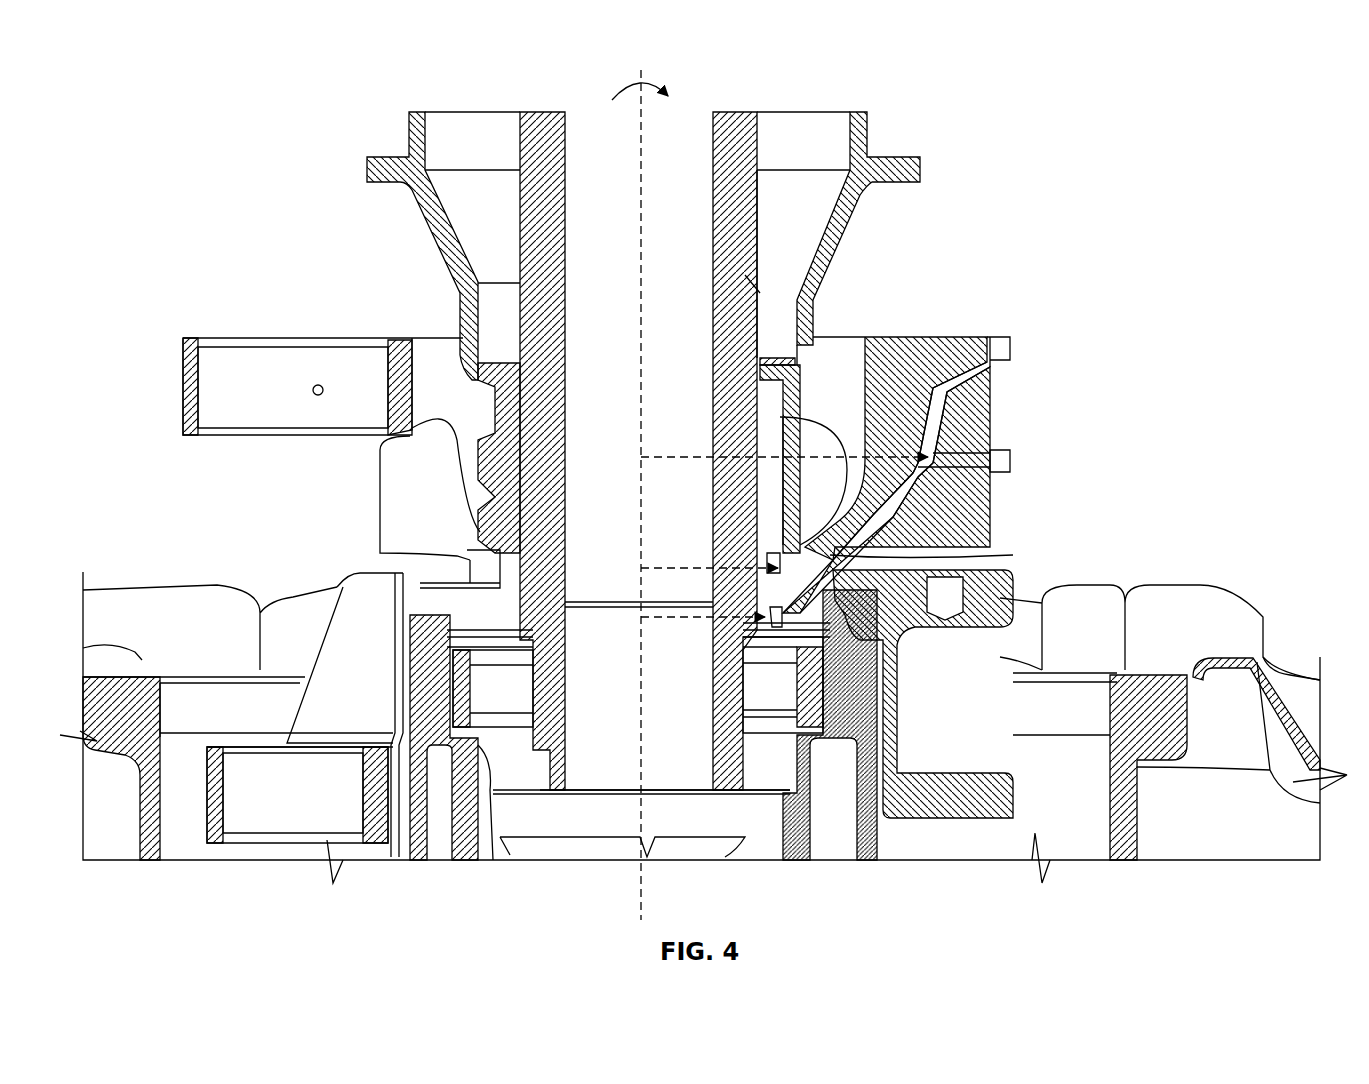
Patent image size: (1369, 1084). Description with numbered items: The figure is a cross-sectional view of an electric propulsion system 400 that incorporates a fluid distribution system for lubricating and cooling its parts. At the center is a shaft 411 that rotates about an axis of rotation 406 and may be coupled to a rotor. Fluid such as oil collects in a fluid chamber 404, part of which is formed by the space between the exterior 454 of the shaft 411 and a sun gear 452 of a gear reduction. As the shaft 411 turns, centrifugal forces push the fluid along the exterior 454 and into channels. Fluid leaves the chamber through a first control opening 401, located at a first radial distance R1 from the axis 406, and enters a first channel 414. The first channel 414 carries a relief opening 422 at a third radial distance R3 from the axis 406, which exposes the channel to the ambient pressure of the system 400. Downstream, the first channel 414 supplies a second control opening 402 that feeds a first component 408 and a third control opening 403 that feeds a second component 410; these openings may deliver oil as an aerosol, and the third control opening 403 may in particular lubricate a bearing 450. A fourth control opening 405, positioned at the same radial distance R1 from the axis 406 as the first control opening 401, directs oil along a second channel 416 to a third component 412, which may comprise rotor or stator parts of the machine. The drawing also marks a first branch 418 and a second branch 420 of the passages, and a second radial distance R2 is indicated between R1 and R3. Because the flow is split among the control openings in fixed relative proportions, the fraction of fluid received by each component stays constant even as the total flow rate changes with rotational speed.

The electric propulsion system 400 is at (147, 66).
The first control opening 401 is at (753, 630).
The second control opening 402 is at (950, 469).
The third control opening 403 is at (956, 382).
The fluid chamber 404 is at (745, 694).
The fourth control opening 405 is at (783, 349).
The axis of rotation 406 is at (642, 887).
The first component 408 is at (1012, 457).
The second component 410 is at (983, 351).
The shaft 411 is at (725, 118).
The third component 412 is at (843, 108).
The first channel 414 is at (873, 520).
The second channel 416 is at (755, 289).
The first branch 418 is at (966, 456).
The second branch 420 is at (977, 357).
The relief opening 422 is at (785, 549).
The bearing 450 is at (318, 390).
The sun gear 452 is at (460, 283).
The exterior 454 is at (837, 360).
The first radial distance R1 is at (689, 621).
The second radial distance R2 is at (770, 459).
The third radial distance R3 is at (695, 569).